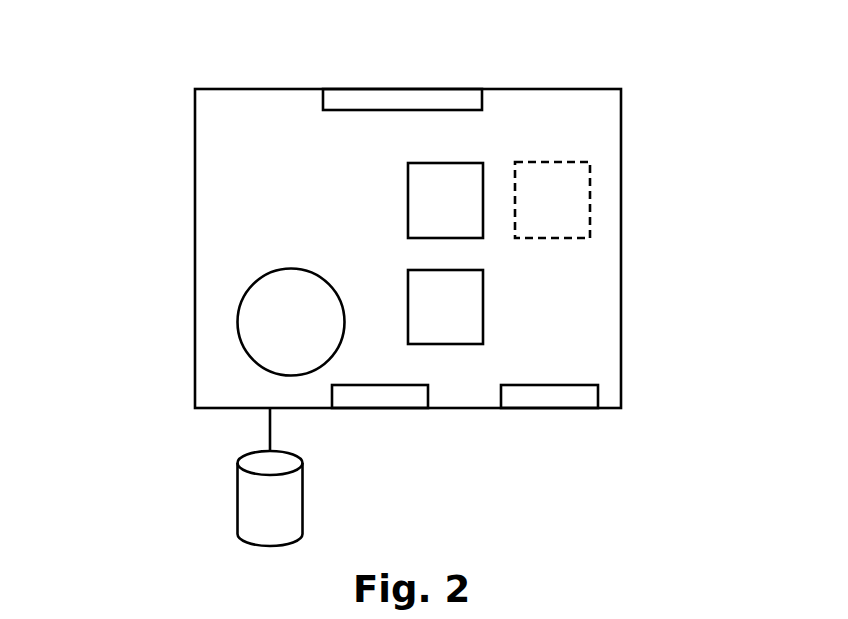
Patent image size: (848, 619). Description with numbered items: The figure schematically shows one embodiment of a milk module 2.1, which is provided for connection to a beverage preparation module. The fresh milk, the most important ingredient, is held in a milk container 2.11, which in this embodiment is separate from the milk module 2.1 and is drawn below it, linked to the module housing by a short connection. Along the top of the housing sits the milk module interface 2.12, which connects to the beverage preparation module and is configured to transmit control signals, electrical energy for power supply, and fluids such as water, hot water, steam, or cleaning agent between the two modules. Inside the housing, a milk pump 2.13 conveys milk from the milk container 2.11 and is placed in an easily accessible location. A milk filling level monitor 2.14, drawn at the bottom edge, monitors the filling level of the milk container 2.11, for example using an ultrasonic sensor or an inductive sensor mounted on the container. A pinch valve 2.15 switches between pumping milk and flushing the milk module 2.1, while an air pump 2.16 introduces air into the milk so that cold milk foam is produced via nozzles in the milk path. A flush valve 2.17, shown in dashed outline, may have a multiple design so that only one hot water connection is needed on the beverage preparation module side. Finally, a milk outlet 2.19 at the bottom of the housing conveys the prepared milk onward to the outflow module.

The milk module 2.1 is at (166, 92).
The milk container 2.11 is at (259, 514).
The milk module interface 2.12 is at (452, 99).
The milk pump 2.13 is at (248, 322).
The milk filling level monitor 2.14 is at (384, 397).
The pinch valve 2.15 is at (472, 312).
The air pump 2.16 is at (461, 227).
The flush valve 2.17 is at (578, 195).
The milk outlet 2.19 is at (554, 397).